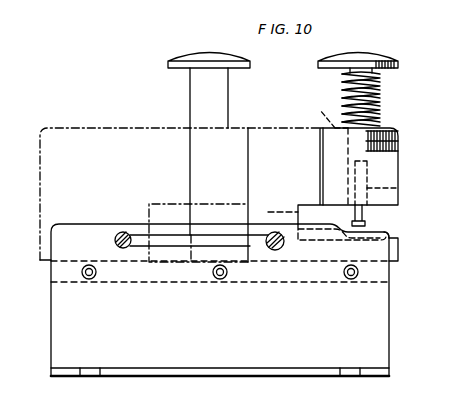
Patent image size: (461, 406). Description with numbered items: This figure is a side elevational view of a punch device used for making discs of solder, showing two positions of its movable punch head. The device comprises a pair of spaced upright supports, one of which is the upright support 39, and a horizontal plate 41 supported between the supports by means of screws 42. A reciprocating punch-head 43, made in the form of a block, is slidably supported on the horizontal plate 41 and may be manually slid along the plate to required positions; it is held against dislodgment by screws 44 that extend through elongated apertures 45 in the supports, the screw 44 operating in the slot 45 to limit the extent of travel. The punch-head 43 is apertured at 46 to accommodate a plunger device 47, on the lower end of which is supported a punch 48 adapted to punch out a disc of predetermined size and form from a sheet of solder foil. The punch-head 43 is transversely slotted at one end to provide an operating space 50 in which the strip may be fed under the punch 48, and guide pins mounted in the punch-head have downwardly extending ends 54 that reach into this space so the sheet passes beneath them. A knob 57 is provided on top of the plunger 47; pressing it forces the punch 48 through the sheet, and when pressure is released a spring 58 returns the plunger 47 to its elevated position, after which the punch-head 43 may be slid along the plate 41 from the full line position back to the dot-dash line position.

The upright support 39 is at (56, 325).
The horizontal plate 41 is at (370, 283).
The screws 42 is at (81, 272).
The punch-head 43 is at (394, 164).
The screws 44 is at (269, 234).
The elongated apertures 45 is at (132, 238).
The aperture 46 is at (398, 189).
The plunger device 47 is at (335, 129).
The punch 48 is at (346, 205).
The operating space 50 is at (391, 242).
The downwardly extending ends 54 is at (392, 232).
The knob 57 is at (216, 56).
The spring 58 is at (362, 53).